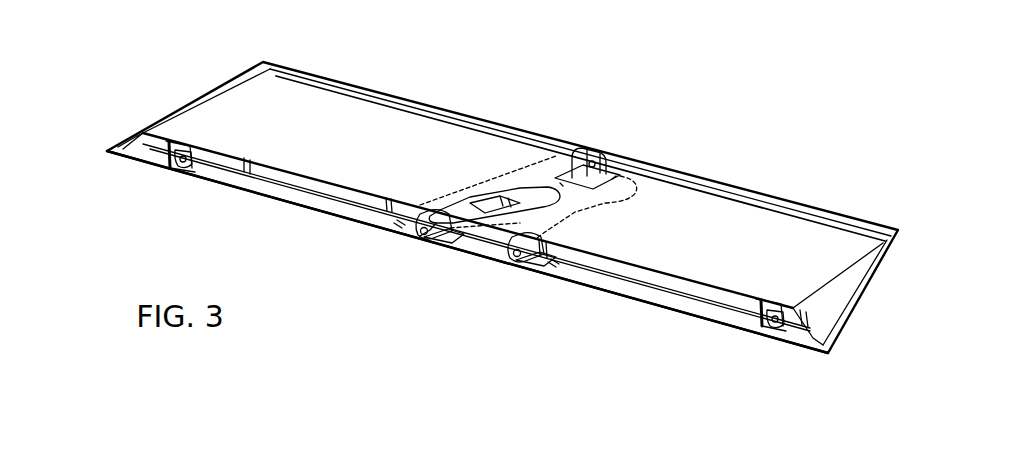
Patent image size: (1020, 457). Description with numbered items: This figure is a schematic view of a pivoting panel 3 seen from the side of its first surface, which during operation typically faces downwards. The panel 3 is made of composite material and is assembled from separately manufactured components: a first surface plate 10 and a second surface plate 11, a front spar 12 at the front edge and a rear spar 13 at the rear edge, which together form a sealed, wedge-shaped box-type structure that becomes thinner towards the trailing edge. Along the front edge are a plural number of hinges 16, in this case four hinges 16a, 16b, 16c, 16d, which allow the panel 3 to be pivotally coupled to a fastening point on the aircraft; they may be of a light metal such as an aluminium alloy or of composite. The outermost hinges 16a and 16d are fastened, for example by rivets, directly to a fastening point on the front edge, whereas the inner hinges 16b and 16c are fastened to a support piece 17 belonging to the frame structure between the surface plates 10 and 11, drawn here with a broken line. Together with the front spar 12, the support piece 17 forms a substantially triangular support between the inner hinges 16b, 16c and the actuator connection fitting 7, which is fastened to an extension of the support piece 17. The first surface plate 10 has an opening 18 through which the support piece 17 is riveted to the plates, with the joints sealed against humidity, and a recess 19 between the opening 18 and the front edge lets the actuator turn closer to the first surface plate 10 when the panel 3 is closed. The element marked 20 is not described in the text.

The pivoting panel 3 is at (711, 108).
The actuator connection fitting 7 is at (607, 153).
The first surface plate 10 is at (777, 230).
The second surface plate 11 is at (695, 321).
The front spar 12 is at (283, 193).
The rear spar 13 is at (358, 80).
The hinges 16 is at (383, 266).
The outermost hinge 16a is at (173, 172).
The inner hinge 16b is at (422, 236).
The inner hinge 16c is at (512, 258).
The outermost hinge 16d is at (760, 310).
The support piece 17 is at (632, 198).
The opening 18 is at (520, 213).
The recess 19 is at (481, 223).
The end wall 20 is at (820, 310).